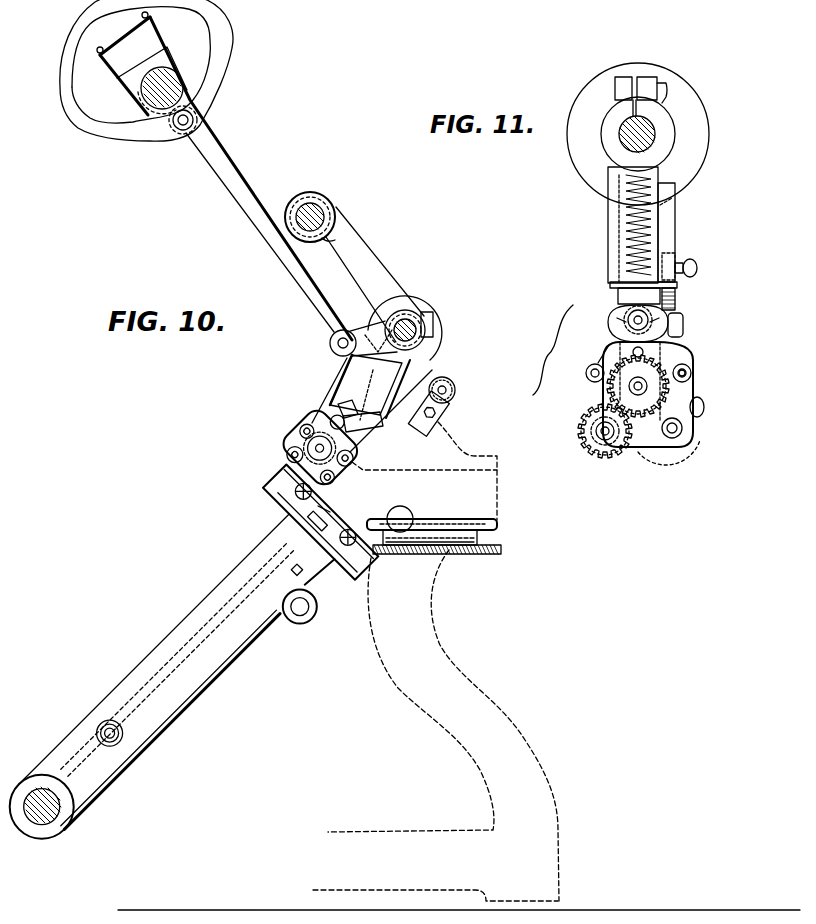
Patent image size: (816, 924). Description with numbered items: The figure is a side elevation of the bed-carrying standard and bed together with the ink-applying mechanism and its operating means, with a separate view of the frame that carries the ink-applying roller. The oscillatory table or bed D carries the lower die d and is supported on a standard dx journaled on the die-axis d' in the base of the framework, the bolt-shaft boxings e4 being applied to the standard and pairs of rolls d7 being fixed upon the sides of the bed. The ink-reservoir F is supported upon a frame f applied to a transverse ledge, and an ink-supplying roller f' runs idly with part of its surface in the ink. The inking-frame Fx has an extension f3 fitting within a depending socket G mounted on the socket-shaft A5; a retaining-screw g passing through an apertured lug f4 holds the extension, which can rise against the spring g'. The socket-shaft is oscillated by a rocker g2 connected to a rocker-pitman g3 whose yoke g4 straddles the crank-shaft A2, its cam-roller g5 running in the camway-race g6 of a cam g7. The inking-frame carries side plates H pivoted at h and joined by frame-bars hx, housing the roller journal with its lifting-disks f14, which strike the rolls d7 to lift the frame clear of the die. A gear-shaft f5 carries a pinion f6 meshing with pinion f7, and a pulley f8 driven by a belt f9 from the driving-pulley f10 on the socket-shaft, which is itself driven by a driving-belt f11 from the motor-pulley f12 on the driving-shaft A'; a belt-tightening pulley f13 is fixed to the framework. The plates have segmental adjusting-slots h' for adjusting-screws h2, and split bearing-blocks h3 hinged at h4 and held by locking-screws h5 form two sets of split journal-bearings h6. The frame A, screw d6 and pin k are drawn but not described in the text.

In FIG. 10, the machine frame A is at (459, 666).
In FIG. 10, the driving-shaft A' is at (311, 205).
In FIG. 10, the crank-shaft A2 is at (166, 114).
In FIG. 10, the socket-shaft A5 is at (428, 338).
In FIG. 11, the socket-shaft A5 is at (630, 137).
In FIG. 10, the oscillatory table or bed D is at (268, 490).
In FIG. 10, the lower die d is at (343, 499).
In FIG. 10, the die-axis d' is at (49, 806).
In FIG. 10, the standard dx is at (203, 670).
In FIG. 10, the screw d6 is at (120, 742).
In FIG. 10, the rolls d7 is at (312, 523).
In FIG. 10, the bolt-shaft boxings e4 is at (300, 623).
In FIG. 10, the ink-reservoir F is at (432, 520).
In FIG. 10, the frame f is at (453, 540).
In FIG. 10, the ink-supplying roller f' is at (401, 511).
In FIG. 10, the extension or carrying-arm f3 is at (336, 408).
In FIG. 11, the extension or carrying-arm f3 is at (630, 293).
In FIG. 11, the apertured lug / journal f4 is at (683, 322).
In FIG. 11, the gear-shaft f5 is at (627, 388).
In FIG. 11, the toothed pinion f6 is at (600, 405).
In FIG. 11, the toothed pinion f7 is at (598, 460).
In FIG. 10, the pulley f8 is at (320, 415).
In FIG. 10, the belt f9 is at (347, 368).
In FIG. 10, the driving-pulley f10 is at (415, 305).
In FIG. 10, the driving-belt f11 is at (369, 258).
In FIG. 10, the motor-pulley f12 is at (324, 239).
In FIG. 10, the belt-tightening pulley f13 is at (456, 391).
In FIG. 10, the lifting-disks f14 is at (284, 453).
In FIG. 11, the inking-frame Fx is at (550, 350).
In FIG. 10, the depending socket G is at (366, 393).
In FIG. 11, the depending socket G is at (608, 230).
In FIG. 10, the retaining-screw g is at (391, 411).
In FIG. 11, the retaining-screw g is at (688, 297).
In FIG. 11, the spring g' is at (613, 226).
In FIG. 10, the rocker g2 is at (338, 332).
In FIG. 10, the rocker-pitman g3 is at (232, 190).
In FIG. 10, the yoke g4 is at (134, 41).
In FIG. 10, the cam-roller g5 is at (196, 120).
In FIG. 10, the camway-race g6 is at (93, 123).
In FIG. 10, the cam g7 is at (226, 33).
In FIG. 10, the side plates H is at (316, 485).
In FIG. 11, the side plates H is at (638, 447).
In FIG. 10, the pivots h is at (347, 468).
In FIG. 11, the segmental adjusting-slots h' is at (630, 318).
In FIG. 11, the adjusting-screws h2 is at (612, 346).
In FIG. 11, the split bearing-blocks h3 is at (683, 430).
In FIG. 11, the hinge h4 is at (587, 372).
In FIG. 11, the locking-screws h5 is at (705, 406).
In FIG. 11, the split journal-bearings h6 is at (660, 448).
In FIG. 10, the frame-bars hx is at (355, 465).
In FIG. 11, the frame-bars hx is at (690, 368).
In FIG. 11, the pin k is at (644, 352).